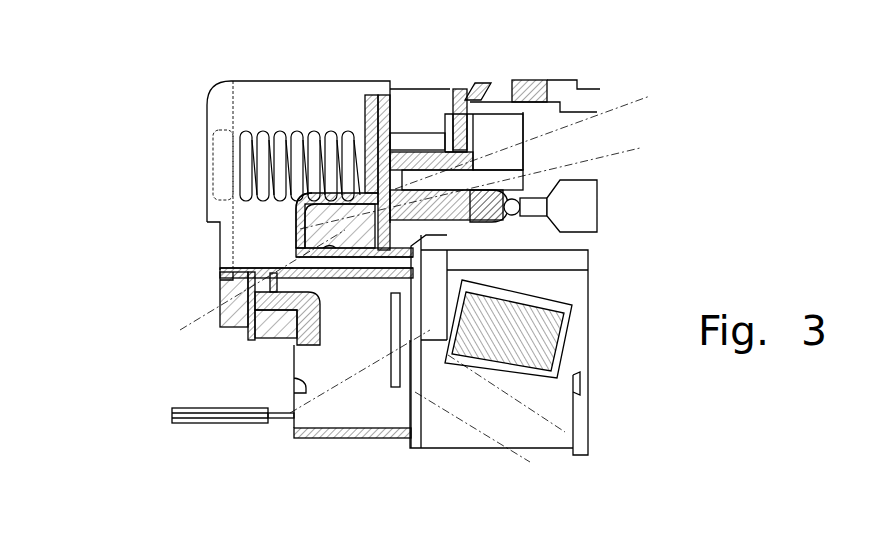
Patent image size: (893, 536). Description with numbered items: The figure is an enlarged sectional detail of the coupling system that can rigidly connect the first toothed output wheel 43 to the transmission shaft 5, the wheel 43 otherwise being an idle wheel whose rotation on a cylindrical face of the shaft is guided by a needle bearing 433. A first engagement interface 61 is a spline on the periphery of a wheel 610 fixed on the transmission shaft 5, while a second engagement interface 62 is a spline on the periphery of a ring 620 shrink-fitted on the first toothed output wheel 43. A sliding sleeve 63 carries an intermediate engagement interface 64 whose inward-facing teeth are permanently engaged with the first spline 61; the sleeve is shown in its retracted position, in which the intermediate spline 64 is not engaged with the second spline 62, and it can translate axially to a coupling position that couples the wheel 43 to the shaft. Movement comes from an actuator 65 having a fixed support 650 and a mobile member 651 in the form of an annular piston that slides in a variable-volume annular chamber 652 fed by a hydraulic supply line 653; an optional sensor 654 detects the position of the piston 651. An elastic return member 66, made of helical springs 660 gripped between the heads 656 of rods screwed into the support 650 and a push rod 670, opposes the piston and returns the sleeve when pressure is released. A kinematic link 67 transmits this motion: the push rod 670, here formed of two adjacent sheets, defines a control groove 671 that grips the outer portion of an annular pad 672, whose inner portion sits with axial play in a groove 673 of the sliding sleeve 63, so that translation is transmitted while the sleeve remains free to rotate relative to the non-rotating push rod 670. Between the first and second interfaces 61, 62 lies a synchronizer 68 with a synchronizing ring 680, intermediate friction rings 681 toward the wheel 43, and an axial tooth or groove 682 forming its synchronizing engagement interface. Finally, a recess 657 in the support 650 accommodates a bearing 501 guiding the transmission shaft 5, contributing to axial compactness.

The transmission shaft 5 is at (565, 458).
The first toothed output wheel 43 is at (260, 398).
The first engagement interface 61 is at (310, 272).
The second engagement interface 62 is at (218, 268).
The sliding sleeve 63 is at (310, 226).
The intermediate engagement interface 64 is at (300, 215).
The actuator 65 is at (493, 156).
The elastic return member 66 is at (262, 122).
The kinematic link 67 is at (387, 38).
The synchronizer 68 is at (55, 343).
The needle bearing 433 is at (210, 420).
The bearing 501 is at (557, 405).
The wheel 610 is at (406, 400).
The ring 620 is at (245, 316).
The fixed support 650 is at (525, 172).
The mobile member 651 is at (443, 207).
The annular chamber 652 is at (507, 200).
The hydraulic supply line 653 is at (590, 226).
The sensor 654 is at (487, 96).
The head 656 is at (292, 270).
The recess 657 is at (582, 383).
The helical spring 660 is at (300, 195).
The push rod 670 is at (393, 110).
The control groove 671 is at (322, 206).
The annular pad 672 is at (368, 185).
The groove 673 is at (353, 242).
The synchronizing ring 680 is at (295, 335).
The intermediate friction ring 681 is at (290, 310).
The axial tooth or groove 682 is at (270, 290).